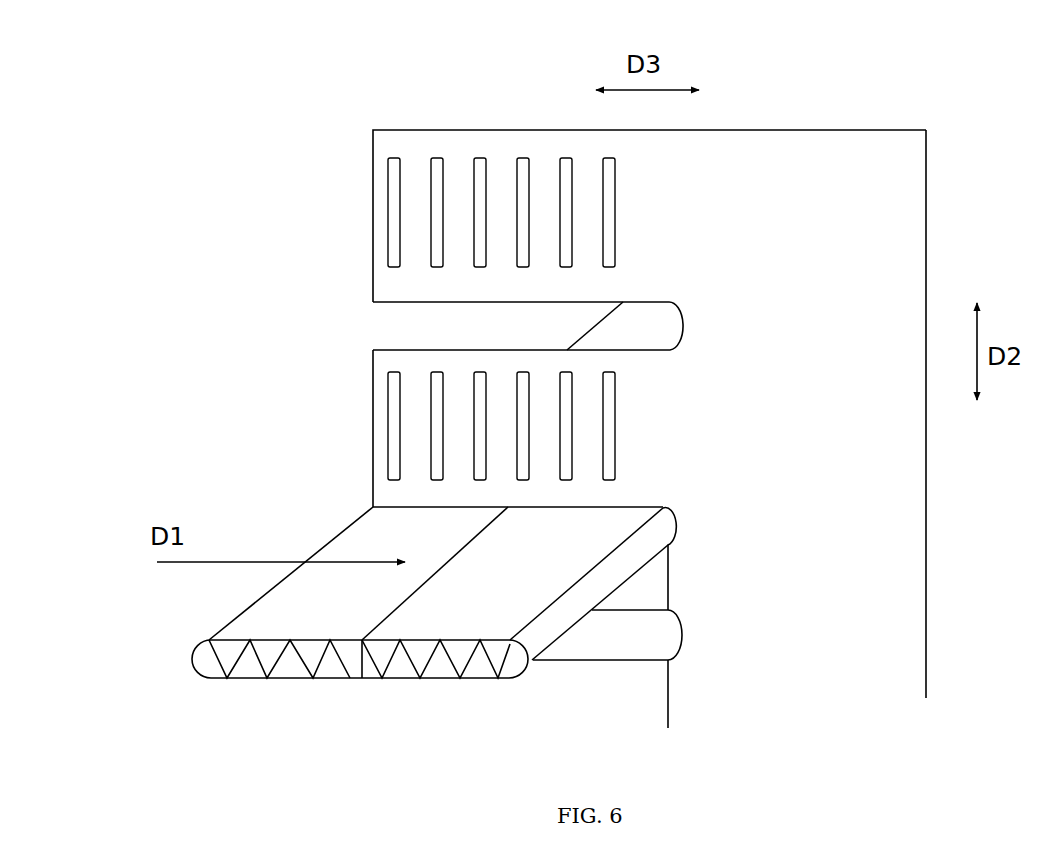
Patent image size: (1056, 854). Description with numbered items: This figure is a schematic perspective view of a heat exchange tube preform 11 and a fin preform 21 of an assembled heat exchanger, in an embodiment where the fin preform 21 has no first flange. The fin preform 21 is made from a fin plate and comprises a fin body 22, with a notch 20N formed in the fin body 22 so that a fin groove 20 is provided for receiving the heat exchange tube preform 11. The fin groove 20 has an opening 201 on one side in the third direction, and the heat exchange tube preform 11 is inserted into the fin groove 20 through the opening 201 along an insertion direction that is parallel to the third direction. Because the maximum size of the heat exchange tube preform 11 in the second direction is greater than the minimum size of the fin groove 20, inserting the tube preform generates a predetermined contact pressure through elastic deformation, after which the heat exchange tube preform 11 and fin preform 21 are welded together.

The heat exchange tube preform 11 is at (341, 518).
The fin groove 20 is at (408, 348).
The opening 201 is at (370, 350).
The notch 20N is at (633, 613).
The fin preform 21 is at (910, 124).
The fin body 22 is at (867, 452).